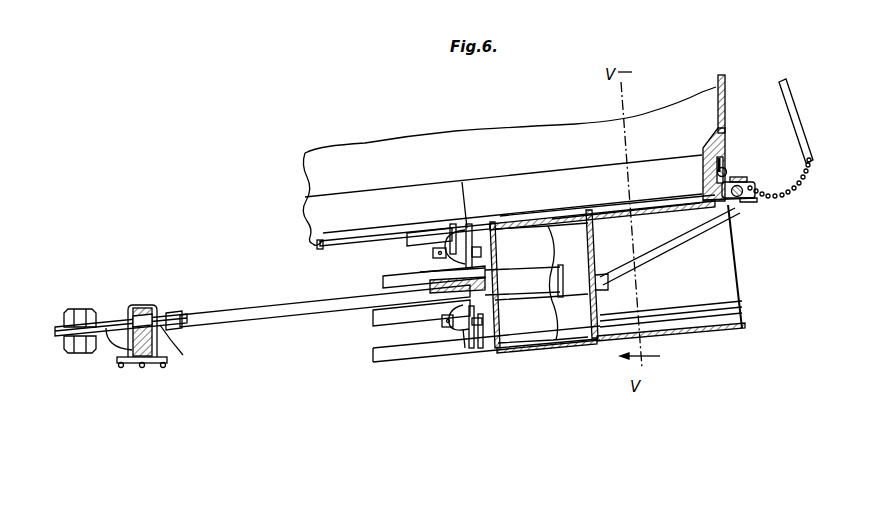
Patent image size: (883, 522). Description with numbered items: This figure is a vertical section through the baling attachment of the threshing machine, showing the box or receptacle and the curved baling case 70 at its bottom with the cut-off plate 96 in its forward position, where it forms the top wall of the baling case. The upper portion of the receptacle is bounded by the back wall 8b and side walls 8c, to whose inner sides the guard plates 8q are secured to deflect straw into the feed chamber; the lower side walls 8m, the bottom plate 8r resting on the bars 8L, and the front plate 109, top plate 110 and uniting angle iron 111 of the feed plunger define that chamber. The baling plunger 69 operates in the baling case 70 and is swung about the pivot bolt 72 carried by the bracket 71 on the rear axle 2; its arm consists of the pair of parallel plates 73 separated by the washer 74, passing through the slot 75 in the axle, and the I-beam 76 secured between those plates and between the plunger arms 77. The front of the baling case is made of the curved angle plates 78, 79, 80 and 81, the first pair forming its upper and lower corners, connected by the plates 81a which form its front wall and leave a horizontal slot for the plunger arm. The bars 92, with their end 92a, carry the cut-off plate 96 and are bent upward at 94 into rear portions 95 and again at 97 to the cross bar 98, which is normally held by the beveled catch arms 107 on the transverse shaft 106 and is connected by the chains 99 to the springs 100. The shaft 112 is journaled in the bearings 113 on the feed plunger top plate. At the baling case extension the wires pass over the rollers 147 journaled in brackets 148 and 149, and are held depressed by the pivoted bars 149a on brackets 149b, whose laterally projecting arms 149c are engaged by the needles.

The rear axle 2 is at (136, 364).
The back wall 8b is at (718, 82).
The side walls 8c is at (595, 107).
The guard plates 8q is at (509, 166).
The side walls of lower portion 8m is at (742, 266).
The bottom plate 8r is at (684, 332).
The bars 8L is at (740, 328).
The baling plunger 69 is at (557, 260).
The baling case 70 is at (542, 318).
The bracket 71 is at (64, 342).
The pivot bolt 72 is at (75, 309).
The parallel plates 73 is at (164, 311).
The washer 74 is at (55, 329).
The slot 75 is at (140, 306).
The I-beam 76 is at (290, 320).
The plunger arms 77 is at (563, 284).
The upper corner angle plate 78 is at (478, 228).
The lower corner angle plate 79 is at (486, 352).
The upper angle plate 80 is at (383, 280).
The lower angle plate 81 is at (393, 313).
The front wall plates 81a is at (498, 251).
The bars 92 is at (378, 240).
The bar end 92a is at (301, 253).
The upwardly bent portion 94 is at (566, 218).
The rear portions 95 is at (584, 217).
The cut-off plate 96 is at (540, 223).
The upward and rearward bent portion 97 is at (735, 177).
The cross bar 98 is at (747, 180).
The chains 99 is at (800, 185).
The springs 100 is at (796, 98).
The transverse shaft 106 is at (727, 168).
The beveled catch arms 107 is at (753, 185).
The front plate 109 is at (597, 244).
The top plate 110 is at (671, 220).
The angle iron 111 is at (620, 221).
The shaft 112 is at (740, 214).
The bearings 113 is at (750, 195).
The rollers 147 is at (466, 338).
The brackets 148 is at (473, 346).
The brackets 149 is at (520, 350).
The pivoted bars 149a is at (442, 326).
The brackets 149b is at (457, 333).
The laterally projecting arms 149c is at (470, 344).